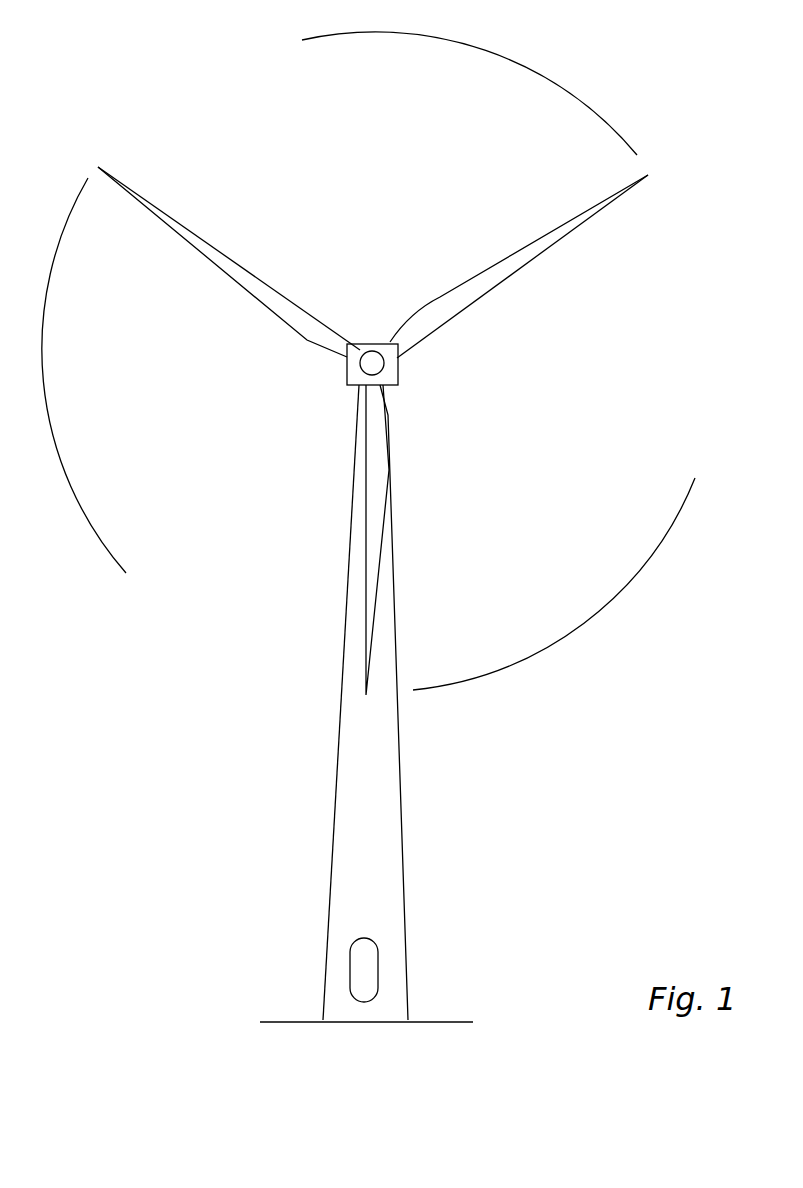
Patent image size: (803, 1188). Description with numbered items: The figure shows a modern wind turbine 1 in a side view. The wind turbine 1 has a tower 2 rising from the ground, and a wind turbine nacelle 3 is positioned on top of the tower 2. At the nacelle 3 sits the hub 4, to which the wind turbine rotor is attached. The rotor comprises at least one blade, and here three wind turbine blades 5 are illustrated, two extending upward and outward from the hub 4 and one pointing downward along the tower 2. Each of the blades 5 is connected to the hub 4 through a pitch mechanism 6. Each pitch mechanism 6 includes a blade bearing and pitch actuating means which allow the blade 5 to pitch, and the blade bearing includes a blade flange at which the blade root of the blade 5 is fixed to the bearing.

The wind turbine 1 is at (250, 825).
The tower 2 is at (373, 752).
The wind turbine nacelle 3 is at (400, 383).
The hub 4 is at (380, 342).
The wind turbine blades 5 is at (373, 572).
The pitch mechanisms 6 is at (398, 363).